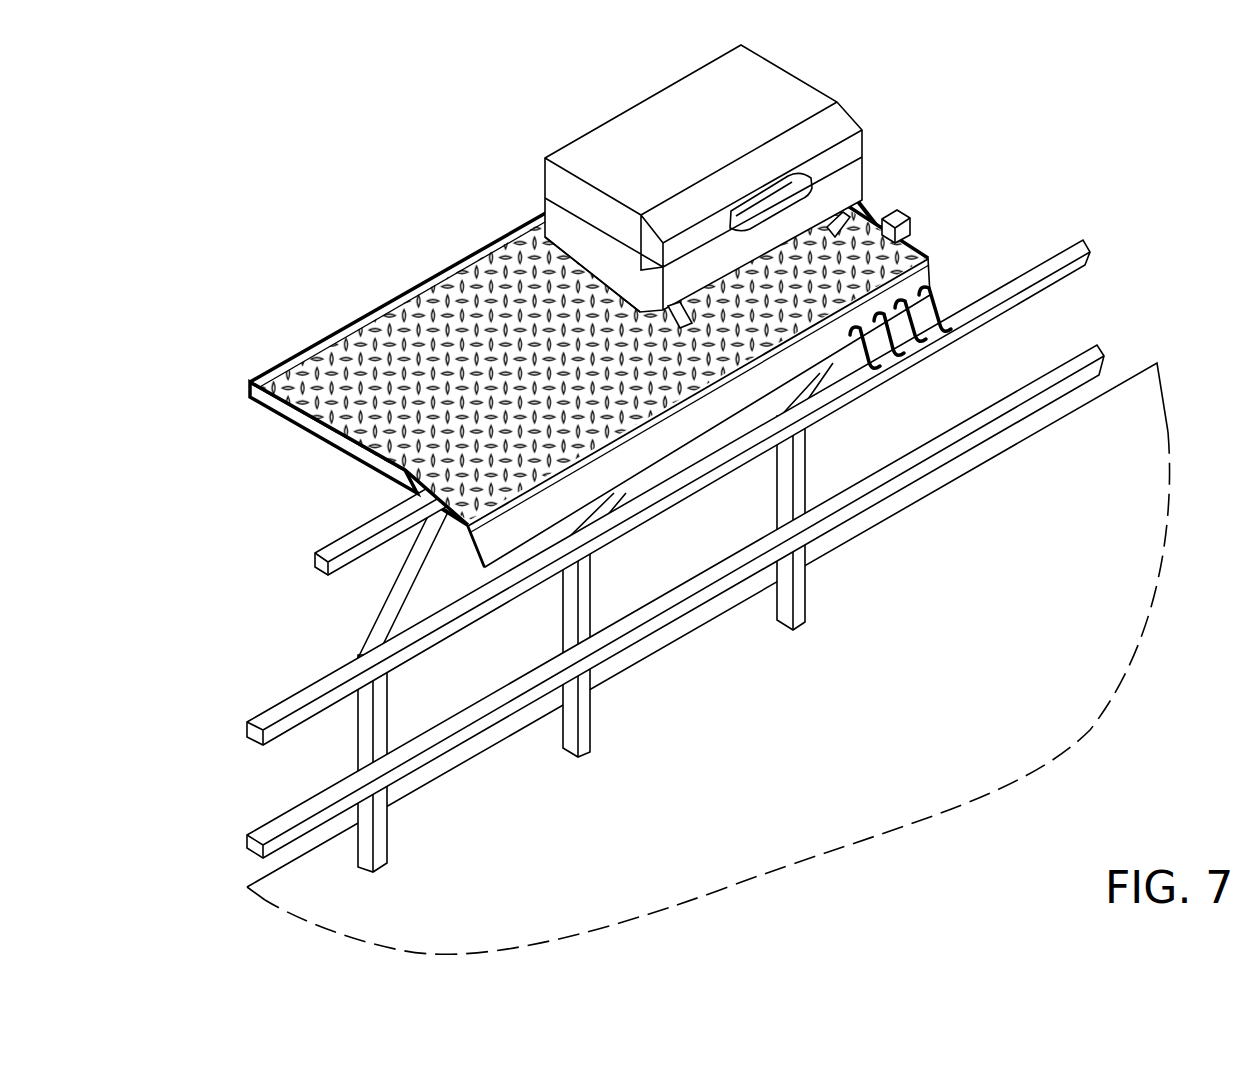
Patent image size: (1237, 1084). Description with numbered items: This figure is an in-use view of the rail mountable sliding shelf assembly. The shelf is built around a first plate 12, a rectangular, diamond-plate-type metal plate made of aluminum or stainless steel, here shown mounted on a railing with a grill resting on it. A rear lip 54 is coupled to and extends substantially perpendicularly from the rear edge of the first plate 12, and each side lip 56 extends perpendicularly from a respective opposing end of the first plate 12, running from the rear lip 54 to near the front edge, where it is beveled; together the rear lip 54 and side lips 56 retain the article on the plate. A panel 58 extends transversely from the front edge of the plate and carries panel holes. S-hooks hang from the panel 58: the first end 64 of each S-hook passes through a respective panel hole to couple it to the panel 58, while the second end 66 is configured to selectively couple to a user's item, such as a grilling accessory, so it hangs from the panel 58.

The first plate 12 is at (475, 287).
The rear lip 54 is at (368, 322).
The side lip 56 is at (292, 415).
The panel 58 is at (503, 527).
The first end 64 is at (928, 258).
The second end 66 is at (945, 317).